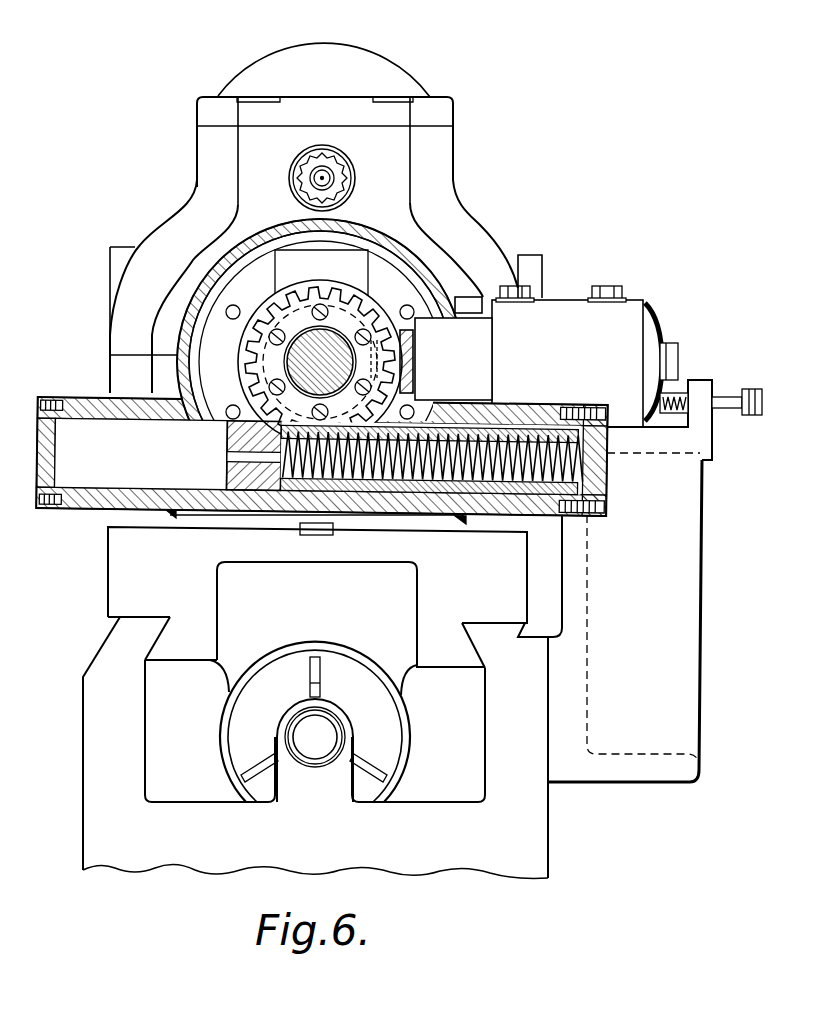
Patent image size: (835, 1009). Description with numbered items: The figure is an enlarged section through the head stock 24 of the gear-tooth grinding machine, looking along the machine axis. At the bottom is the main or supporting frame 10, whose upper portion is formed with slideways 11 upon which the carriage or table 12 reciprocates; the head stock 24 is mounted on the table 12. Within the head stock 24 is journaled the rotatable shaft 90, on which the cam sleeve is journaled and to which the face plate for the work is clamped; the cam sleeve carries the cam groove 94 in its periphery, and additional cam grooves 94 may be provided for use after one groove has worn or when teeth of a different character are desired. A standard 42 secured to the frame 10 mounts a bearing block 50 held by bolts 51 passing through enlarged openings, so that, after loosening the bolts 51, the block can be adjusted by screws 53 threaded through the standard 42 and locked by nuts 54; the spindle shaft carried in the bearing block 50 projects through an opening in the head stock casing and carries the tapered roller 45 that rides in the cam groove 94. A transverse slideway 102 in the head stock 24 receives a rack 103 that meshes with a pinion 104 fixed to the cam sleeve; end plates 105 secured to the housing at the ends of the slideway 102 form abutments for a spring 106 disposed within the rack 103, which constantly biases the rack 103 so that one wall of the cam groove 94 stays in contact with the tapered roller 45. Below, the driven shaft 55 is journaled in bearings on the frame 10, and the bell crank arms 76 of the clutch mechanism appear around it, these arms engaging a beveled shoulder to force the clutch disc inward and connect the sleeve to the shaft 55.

The main or supporting frame 10 is at (105, 738).
The slideways 11 is at (140, 618).
The carriage or table 12 is at (125, 562).
The head stock 24 is at (452, 163).
The standard 42 is at (700, 520).
The tapered roller 45 is at (413, 373).
The bearing block 50 is at (640, 302).
The bolts 51 is at (608, 290).
The screws 53 is at (762, 401).
The nuts 54 is at (712, 392).
The shaft 55 is at (307, 750).
The bell crank arms 76 is at (373, 775).
The shaft 90 is at (262, 348).
The cam groove 94 is at (255, 324).
The transverse slideway 102 is at (133, 485).
The rack 103 is at (227, 473).
The pinion 104 is at (262, 375).
The end plates 105 is at (608, 472).
The spring 106 is at (610, 490).